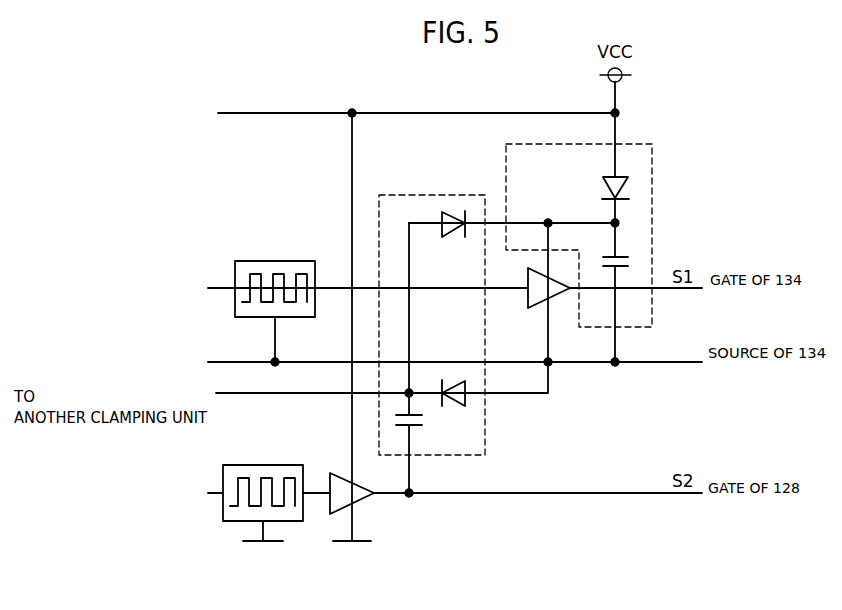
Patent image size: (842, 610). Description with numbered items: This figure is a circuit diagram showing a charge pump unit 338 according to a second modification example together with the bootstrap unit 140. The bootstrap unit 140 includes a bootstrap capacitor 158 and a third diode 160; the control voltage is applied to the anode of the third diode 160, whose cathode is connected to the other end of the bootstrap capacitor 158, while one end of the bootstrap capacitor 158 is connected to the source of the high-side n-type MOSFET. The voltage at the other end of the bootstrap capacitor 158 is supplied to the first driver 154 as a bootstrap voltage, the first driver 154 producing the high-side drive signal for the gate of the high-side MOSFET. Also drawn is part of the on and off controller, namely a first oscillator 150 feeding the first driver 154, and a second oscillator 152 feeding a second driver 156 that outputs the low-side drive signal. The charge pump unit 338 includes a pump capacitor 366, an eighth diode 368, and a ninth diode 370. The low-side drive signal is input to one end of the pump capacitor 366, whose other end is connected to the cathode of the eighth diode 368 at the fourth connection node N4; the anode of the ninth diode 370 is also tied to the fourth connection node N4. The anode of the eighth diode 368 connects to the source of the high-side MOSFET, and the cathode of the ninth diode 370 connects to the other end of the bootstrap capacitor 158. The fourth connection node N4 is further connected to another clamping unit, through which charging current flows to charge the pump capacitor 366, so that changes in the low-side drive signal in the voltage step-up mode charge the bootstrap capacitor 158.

The bootstrap unit 140 is at (652, 151).
The third diode 160 is at (628, 184).
The bootstrap capacitor 158 is at (620, 255).
The ninth diode 370 is at (448, 211).
The first driver 154 is at (528, 299).
The charge pump unit 338 is at (485, 420).
The pump capacitor 366 is at (394, 418).
The eighth diode 368 is at (468, 407).
The fourth connection node N4 is at (413, 395).
The first oscillator 150 is at (233, 314).
The second oscillator 152 is at (220, 516).
The second driver 156 is at (332, 508).